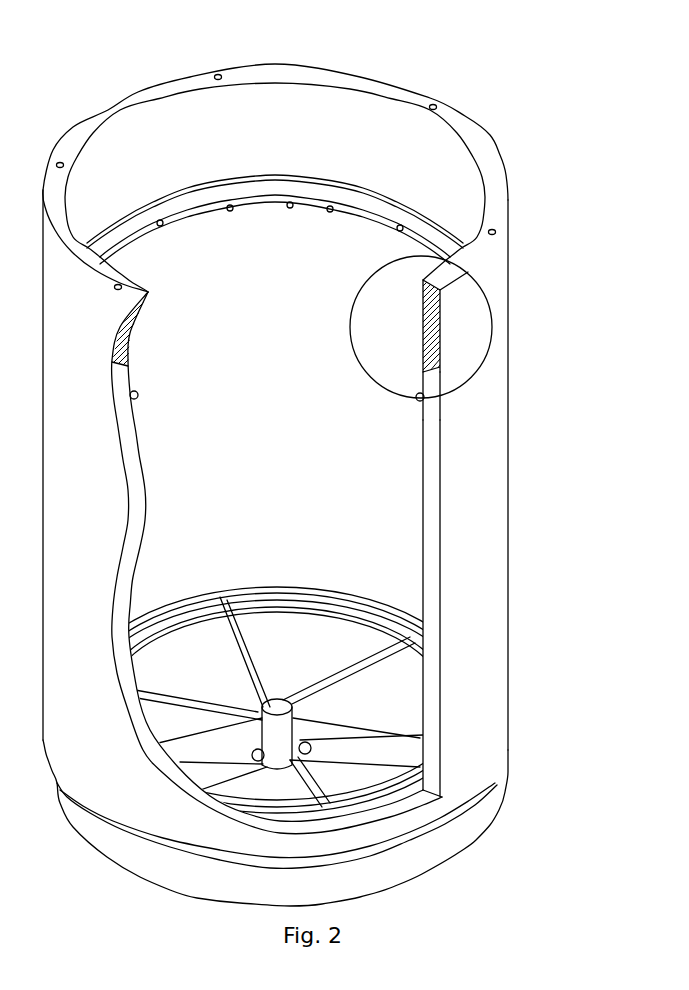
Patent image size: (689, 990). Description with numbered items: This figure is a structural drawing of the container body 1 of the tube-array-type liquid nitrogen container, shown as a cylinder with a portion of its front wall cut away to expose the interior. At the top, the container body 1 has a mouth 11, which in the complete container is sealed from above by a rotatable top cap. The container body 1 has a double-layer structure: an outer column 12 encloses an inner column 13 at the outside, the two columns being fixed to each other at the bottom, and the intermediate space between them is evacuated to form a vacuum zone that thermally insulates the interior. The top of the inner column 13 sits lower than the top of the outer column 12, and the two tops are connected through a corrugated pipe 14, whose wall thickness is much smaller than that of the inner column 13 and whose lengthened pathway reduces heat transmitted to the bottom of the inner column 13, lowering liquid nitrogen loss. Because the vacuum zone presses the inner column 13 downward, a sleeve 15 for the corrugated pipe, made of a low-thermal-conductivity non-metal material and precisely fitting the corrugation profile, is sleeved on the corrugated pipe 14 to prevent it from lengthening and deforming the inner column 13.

The container body 1 is at (480, 113).
The mouth 11 is at (303, 140).
The outer column 12 is at (440, 575).
The inner column 13 is at (425, 512).
The corrugated pipe 14 is at (440, 327).
The sleeve for the corrugated pipe 15 is at (437, 367).